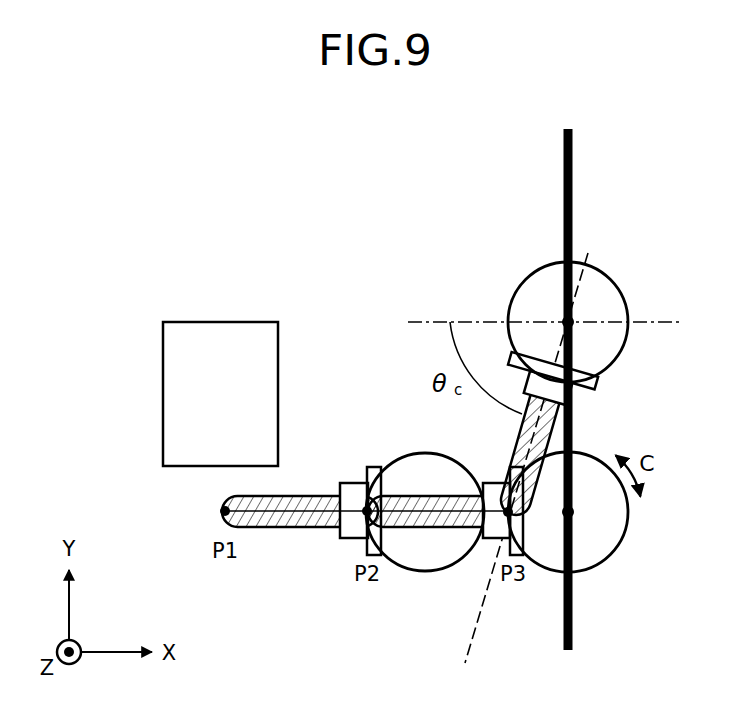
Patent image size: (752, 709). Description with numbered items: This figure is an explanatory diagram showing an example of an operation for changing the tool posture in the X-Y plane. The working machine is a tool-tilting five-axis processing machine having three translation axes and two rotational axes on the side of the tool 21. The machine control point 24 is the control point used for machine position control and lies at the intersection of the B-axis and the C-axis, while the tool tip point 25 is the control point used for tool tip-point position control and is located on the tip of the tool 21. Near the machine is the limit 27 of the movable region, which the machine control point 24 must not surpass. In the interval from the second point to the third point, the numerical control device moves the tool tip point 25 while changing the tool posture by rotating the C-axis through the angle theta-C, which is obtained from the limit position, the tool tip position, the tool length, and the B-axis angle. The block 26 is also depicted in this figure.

The tool 21 is at (620, 288).
The machine control point 24 is at (568, 512).
The tool tip point 25 is at (222, 508).
The block 26 is at (220, 322).
The limit 27 is at (573, 187).